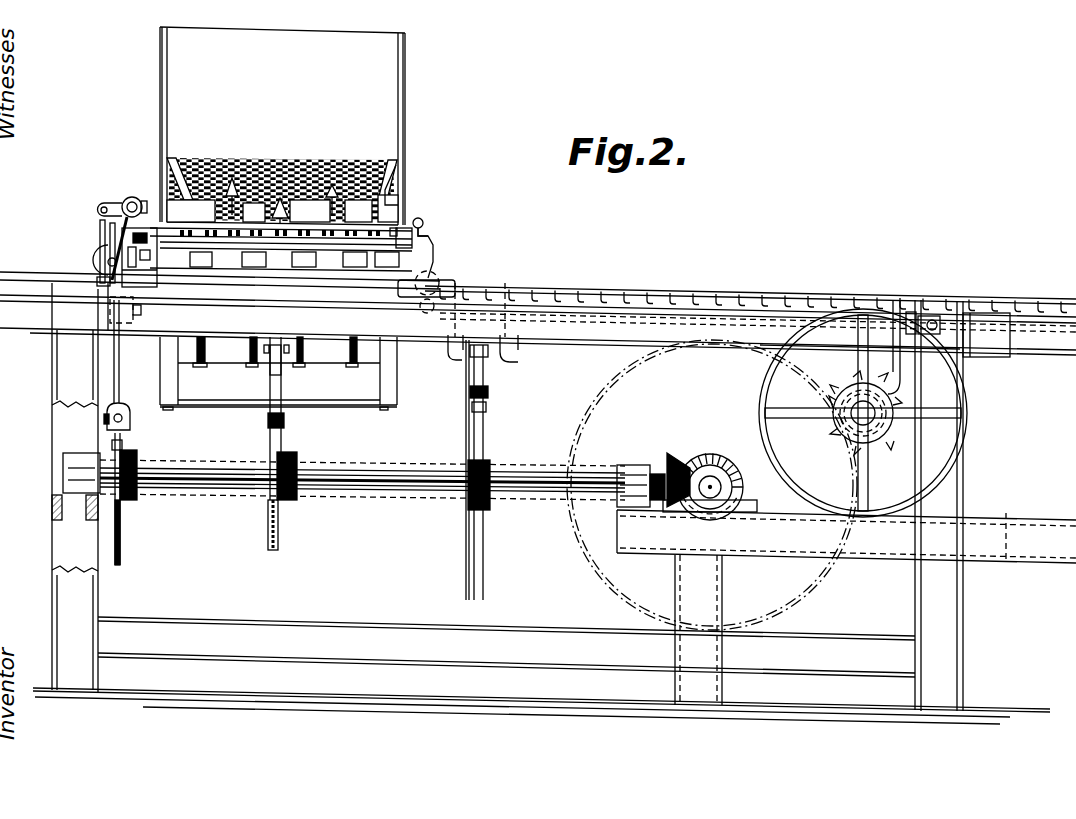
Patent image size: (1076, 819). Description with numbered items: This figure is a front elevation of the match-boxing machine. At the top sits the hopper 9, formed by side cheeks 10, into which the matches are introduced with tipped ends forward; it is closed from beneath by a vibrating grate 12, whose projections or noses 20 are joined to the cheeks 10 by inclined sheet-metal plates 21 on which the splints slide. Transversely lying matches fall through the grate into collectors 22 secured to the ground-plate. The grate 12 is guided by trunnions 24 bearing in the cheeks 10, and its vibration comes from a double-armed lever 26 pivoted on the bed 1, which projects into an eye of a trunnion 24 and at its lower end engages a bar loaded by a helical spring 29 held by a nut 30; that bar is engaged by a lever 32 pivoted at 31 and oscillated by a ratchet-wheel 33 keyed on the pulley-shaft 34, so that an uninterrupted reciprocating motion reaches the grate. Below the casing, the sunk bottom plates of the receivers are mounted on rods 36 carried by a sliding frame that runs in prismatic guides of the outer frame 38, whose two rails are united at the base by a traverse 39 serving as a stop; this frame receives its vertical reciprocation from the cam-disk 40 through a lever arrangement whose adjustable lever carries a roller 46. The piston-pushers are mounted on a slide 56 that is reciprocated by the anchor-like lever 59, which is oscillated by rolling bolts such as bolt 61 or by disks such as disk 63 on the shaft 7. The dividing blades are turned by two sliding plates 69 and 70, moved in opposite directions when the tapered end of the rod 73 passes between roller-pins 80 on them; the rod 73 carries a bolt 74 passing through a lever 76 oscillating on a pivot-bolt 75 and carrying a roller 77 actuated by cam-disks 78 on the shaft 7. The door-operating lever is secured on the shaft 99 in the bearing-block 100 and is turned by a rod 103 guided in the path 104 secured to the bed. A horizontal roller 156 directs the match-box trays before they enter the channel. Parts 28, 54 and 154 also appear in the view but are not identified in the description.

The bed 1 is at (55, 536).
The shaft 7 is at (410, 472).
The hopper 9 is at (282, 126).
The side cheeks 10 is at (160, 90).
The vibrating grate 12 is at (400, 227).
The projections 20 is at (331, 191).
The inclined sheet-metal plates 21 is at (393, 178).
The collectors 22 is at (385, 260).
The trunnions 24 is at (423, 226).
The double-armed lever 26 is at (433, 256).
The upright bar 28 is at (913, 312).
The helical spring 29 is at (931, 318).
The nut 30 is at (952, 322).
The pivot 31 is at (872, 350).
The lever 32 is at (898, 382).
The ratchet-wheel 33 is at (881, 430).
The pulley-shaft 34 is at (855, 425).
The rods 36 is at (275, 352).
The outer frame 38 is at (384, 375).
The traverse 39 is at (333, 405).
The cam-disk 40 is at (279, 537).
The roller 46 is at (284, 425).
The hanger bracket 54 is at (492, 350).
The slide 56 is at (492, 325).
The anchor-like lever 59 is at (484, 432).
The rolling bolt 61 is at (488, 394).
The disk 63 is at (467, 433).
The sliding plate 69 is at (327, 247).
The sliding plate 70 is at (404, 234).
The rod 73 is at (144, 200).
The bolt 74 is at (108, 268).
The pivot-bolt 75 is at (142, 316).
The lever 76 is at (119, 351).
The roller 77 is at (130, 420).
The cam-disks 78 is at (124, 446).
The roller-pins 80 is at (160, 240).
The shaft 99 is at (129, 199).
The bearing-block 100 is at (100, 224).
The rod 103 is at (120, 242).
The path 104 is at (96, 268).
The cam disc 154 is at (98, 261).
The horizontal roller 156 is at (97, 282).